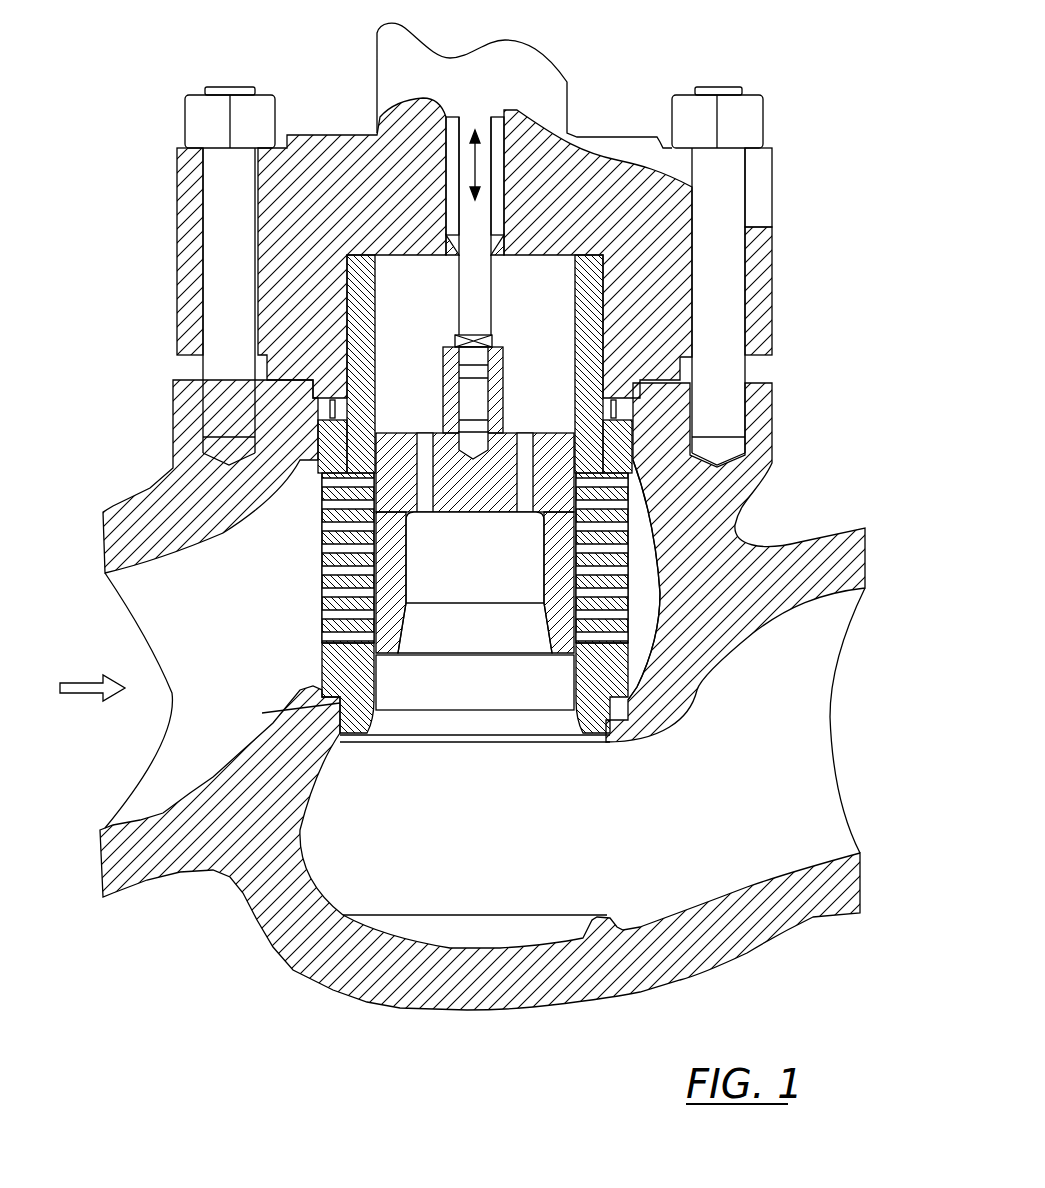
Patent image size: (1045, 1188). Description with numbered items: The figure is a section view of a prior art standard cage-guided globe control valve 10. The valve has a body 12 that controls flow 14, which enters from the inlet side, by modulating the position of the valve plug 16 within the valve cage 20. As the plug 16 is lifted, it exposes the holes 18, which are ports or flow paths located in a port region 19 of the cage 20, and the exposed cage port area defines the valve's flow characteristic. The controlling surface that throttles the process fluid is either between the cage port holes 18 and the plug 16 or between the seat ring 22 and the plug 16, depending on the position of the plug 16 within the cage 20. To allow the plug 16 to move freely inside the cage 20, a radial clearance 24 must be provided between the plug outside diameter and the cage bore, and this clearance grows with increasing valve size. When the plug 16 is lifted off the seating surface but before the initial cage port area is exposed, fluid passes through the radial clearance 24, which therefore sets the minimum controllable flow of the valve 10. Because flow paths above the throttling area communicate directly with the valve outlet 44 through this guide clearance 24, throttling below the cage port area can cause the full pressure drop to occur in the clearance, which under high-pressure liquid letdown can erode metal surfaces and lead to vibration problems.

The cage-guided globe control valve 10 is at (218, 1072).
The body 12 is at (135, 506).
The flow 14 is at (70, 700).
The valve plug 16 is at (544, 583).
The holes 18 is at (598, 641).
The port region 19 is at (642, 578).
The valve cage 20 is at (596, 415).
The seat ring 22 is at (575, 672).
The radial clearance 24 is at (550, 684).
The valve outlet 44 is at (427, 742).